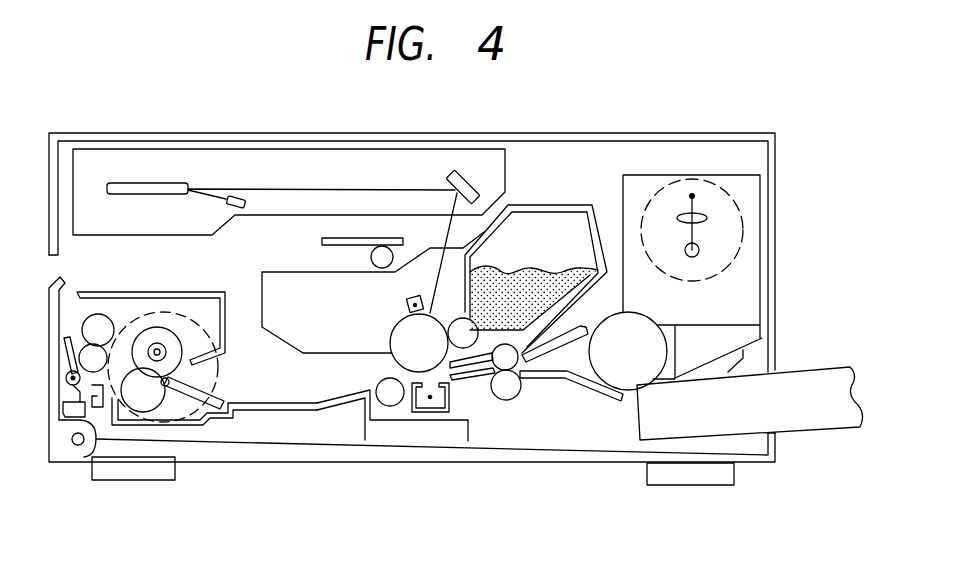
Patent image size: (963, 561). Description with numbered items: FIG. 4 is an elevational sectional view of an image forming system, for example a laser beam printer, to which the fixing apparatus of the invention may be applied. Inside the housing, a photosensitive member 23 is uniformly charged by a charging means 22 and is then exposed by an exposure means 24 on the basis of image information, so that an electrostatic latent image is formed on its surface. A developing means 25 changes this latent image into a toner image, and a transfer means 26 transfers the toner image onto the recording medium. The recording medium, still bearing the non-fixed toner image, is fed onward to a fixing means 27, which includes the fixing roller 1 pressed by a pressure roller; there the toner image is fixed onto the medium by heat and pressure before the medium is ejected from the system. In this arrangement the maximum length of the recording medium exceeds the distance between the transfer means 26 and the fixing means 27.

The fixing roller 1 is at (820, 430).
The charging means 22 is at (402, 303).
The photosensitive member 23 is at (390, 357).
The exposure means 24 is at (118, 148).
The developing means 25 is at (560, 207).
The transfer means 26 is at (429, 413).
The fixing means 27 is at (188, 427).